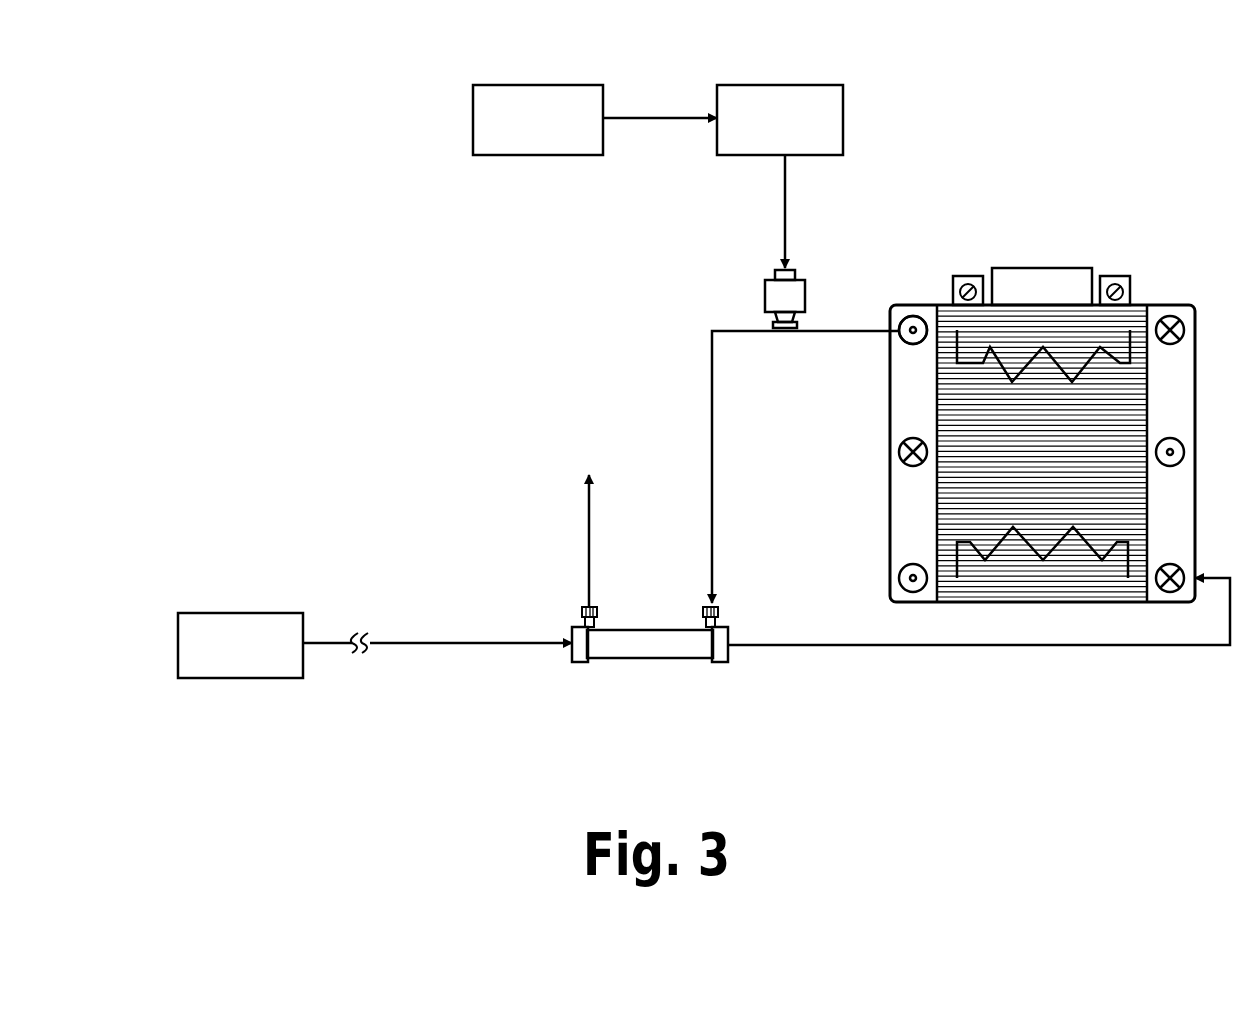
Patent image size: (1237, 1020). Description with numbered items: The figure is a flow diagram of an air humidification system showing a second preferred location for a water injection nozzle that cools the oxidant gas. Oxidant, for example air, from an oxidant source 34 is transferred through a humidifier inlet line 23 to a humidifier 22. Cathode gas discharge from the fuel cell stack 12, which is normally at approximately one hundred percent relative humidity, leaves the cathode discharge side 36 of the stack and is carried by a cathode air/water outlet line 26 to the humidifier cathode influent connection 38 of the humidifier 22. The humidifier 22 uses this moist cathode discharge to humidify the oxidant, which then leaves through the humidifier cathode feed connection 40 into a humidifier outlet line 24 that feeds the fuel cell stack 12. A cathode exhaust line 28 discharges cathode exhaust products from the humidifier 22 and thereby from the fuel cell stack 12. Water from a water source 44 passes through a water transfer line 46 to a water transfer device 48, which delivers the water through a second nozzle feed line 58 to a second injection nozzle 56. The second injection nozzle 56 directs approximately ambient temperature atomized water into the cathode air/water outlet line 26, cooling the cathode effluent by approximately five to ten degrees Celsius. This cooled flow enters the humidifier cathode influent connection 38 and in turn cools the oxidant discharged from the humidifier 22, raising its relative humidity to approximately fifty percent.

The fuel cell stack 12 is at (1142, 305).
The humidifier 22 is at (623, 630).
The humidifier inlet line 23 is at (382, 640).
The humidifier outlet line 24 is at (1097, 647).
The cathode air/water outlet line 26 is at (858, 330).
The cathode exhaust line 28 is at (587, 553).
The oxidant source 34 is at (248, 612).
The cathode discharge side 36 is at (908, 305).
The humidifier cathode influent connection 38 is at (717, 607).
The humidifier cathode feed connection 40 is at (728, 630).
The water source 44 is at (532, 153).
The water transfer line 46 is at (655, 117).
The water transfer device 48 is at (797, 85).
The second injection nozzle 56 is at (765, 298).
The second nozzle feed line 58 is at (782, 210).